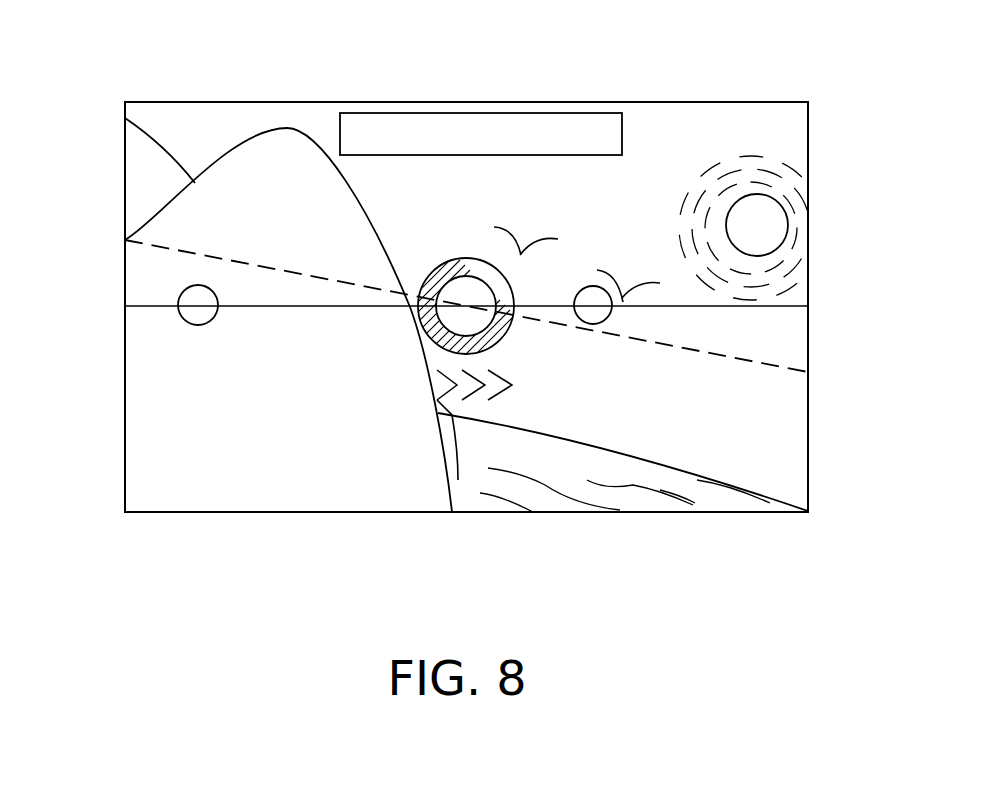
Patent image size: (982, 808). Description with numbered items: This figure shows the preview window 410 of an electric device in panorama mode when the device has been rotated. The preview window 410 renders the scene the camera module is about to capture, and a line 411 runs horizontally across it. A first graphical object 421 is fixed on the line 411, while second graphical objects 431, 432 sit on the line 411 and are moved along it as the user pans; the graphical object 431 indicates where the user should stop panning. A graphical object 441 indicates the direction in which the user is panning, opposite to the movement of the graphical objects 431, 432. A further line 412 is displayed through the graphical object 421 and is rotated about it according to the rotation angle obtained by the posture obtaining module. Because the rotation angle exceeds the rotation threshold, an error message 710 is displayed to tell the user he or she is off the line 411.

The error message 710 is at (582, 113).
The preview window 410 is at (808, 177).
The line 411 is at (785, 305).
The line 412 is at (773, 365).
The graphical object 421 is at (423, 330).
The graphical object 431 is at (597, 326).
The graphical object 432 is at (186, 322).
The graphical object 441 is at (458, 480).